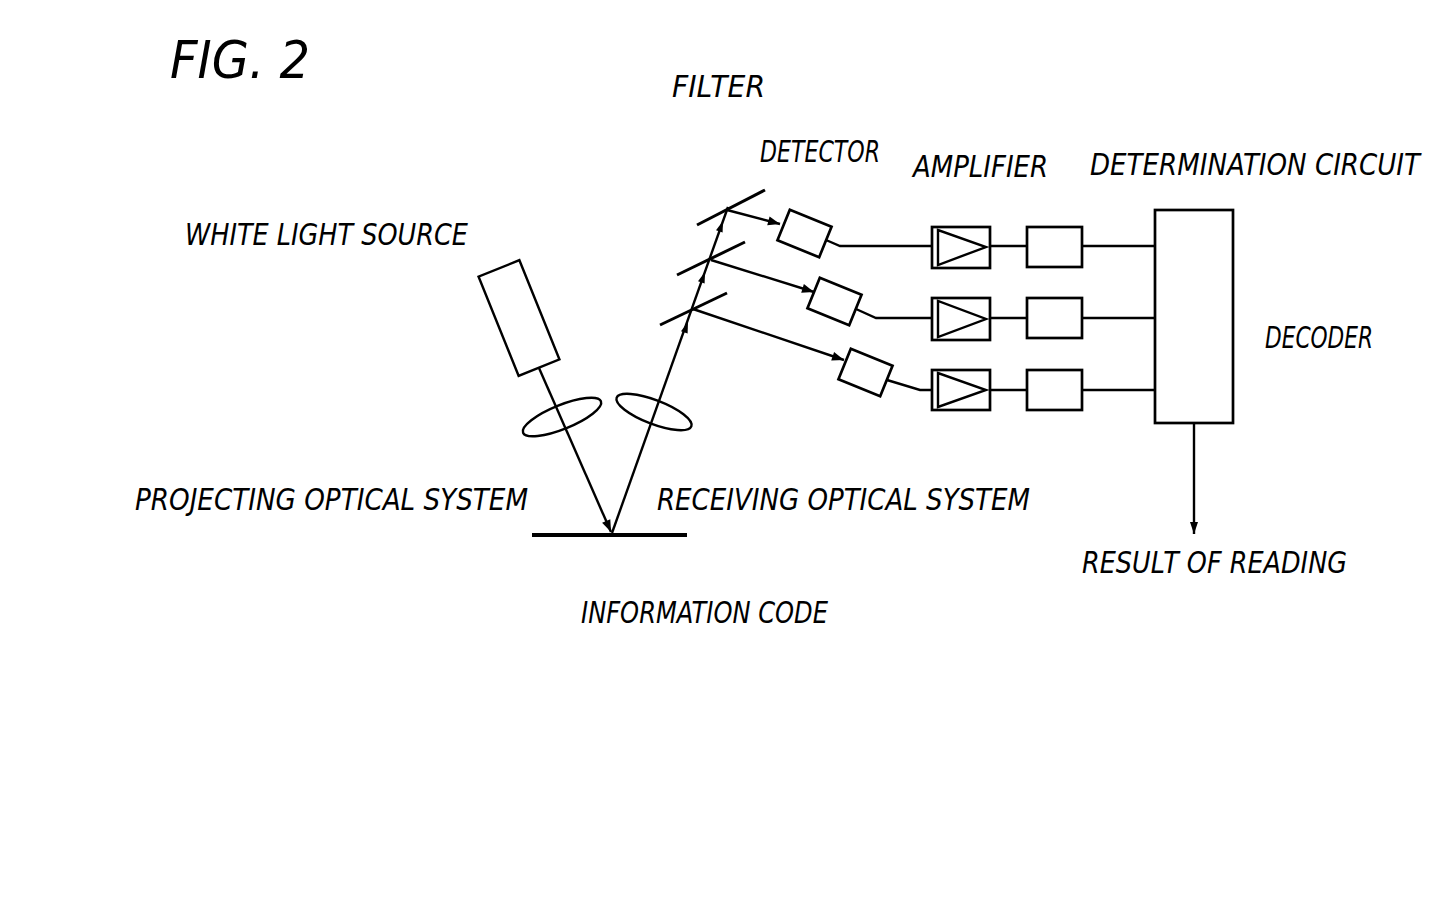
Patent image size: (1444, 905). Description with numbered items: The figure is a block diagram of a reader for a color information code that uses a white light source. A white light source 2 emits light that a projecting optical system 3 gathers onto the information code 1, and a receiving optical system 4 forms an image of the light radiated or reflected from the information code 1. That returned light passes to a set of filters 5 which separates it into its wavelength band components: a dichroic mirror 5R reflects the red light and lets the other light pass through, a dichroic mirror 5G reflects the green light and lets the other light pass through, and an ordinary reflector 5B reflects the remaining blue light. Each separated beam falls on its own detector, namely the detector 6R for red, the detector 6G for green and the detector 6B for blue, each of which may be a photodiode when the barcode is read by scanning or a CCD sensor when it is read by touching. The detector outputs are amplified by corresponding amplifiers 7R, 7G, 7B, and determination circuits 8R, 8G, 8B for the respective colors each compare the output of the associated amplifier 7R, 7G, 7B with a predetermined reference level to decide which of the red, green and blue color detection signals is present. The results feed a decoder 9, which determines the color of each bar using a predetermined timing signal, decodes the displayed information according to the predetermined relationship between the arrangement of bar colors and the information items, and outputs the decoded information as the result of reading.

The information code 1 is at (652, 537).
The white light source 2 is at (482, 298).
The projecting optical system 3 is at (523, 435).
The receiving optical system 4 is at (675, 430).
The set of filters 5 is at (713, 177).
The dichroic mirror 5G is at (706, 219).
The ordinary reflector 5B is at (684, 268).
The dichroic mirror 5R is at (668, 320).
The detector 6G is at (810, 216).
The detector 6B is at (812, 310).
The detector 6R is at (847, 383).
The amplifier 7G is at (957, 227).
The amplifier 7B is at (945, 298).
The amplifier 7R is at (940, 410).
The determination circuit 8B is at (1070, 227).
The determination circuit 8G is at (1082, 301).
The determination circuit 8R is at (1081, 400).
The decoder 9 is at (1234, 303).